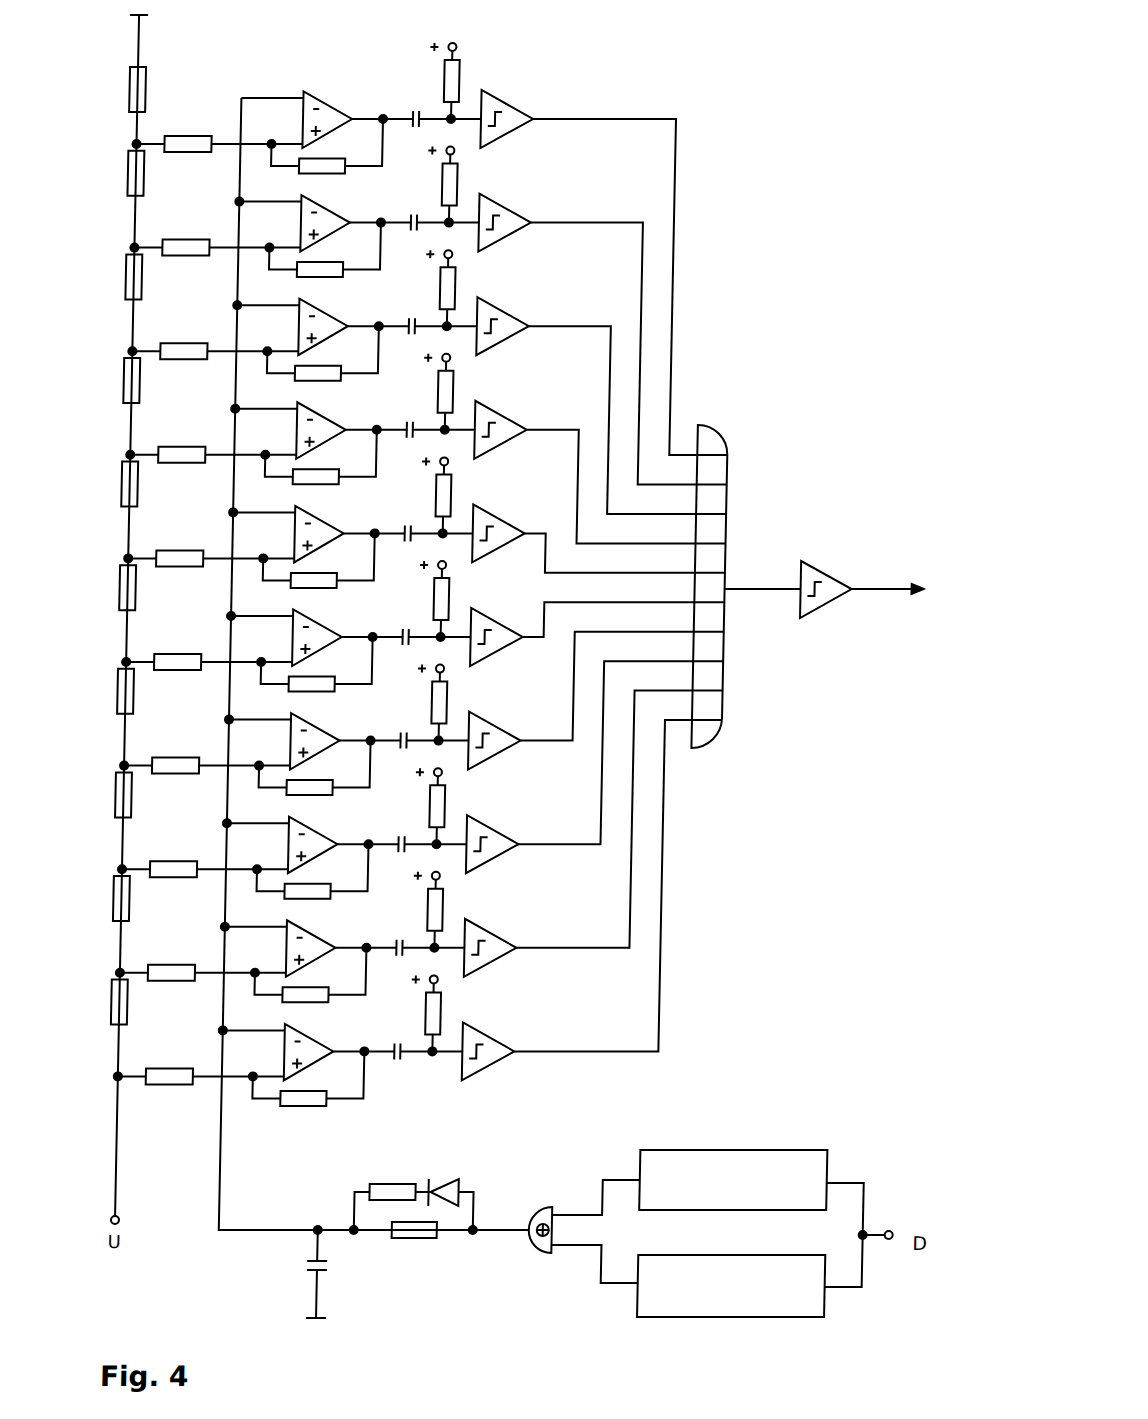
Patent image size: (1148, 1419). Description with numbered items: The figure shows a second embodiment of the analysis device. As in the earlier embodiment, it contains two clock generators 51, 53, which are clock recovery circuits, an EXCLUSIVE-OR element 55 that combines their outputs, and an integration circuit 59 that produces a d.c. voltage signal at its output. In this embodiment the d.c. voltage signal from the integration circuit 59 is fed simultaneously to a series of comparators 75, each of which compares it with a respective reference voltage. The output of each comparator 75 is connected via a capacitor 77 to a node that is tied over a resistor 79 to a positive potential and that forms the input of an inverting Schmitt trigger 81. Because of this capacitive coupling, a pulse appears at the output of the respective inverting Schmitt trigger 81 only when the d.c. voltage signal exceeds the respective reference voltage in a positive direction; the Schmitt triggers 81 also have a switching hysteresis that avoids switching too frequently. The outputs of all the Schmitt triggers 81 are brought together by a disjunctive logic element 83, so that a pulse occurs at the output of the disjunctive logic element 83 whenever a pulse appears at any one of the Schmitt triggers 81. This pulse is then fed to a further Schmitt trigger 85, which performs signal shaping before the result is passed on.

The clock generator 51 is at (732, 1318).
The clock generator 53 is at (752, 1150).
The EXCLUSIVE-OR element 55 is at (560, 1242).
The integration circuit 59 is at (403, 1252).
The comparator 75 is at (327, 941).
The capacitor 77 is at (412, 931).
The resistor 79 is at (453, 921).
The inverting Schmitt trigger 81 is at (512, 936).
The disjunctive logic element 83 is at (738, 655).
The further Schmitt trigger 85 is at (838, 572).